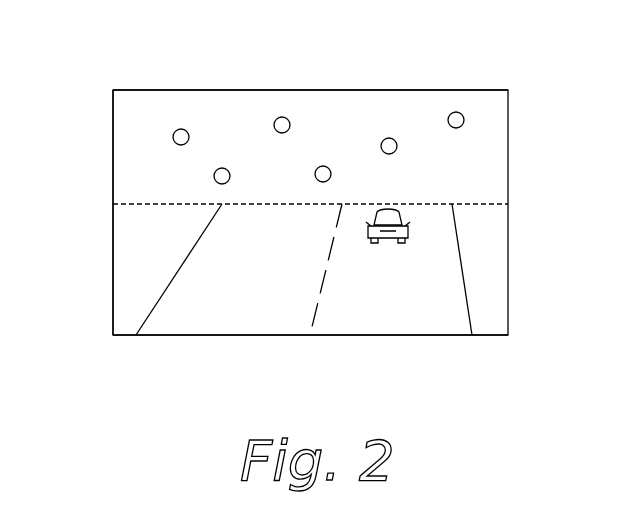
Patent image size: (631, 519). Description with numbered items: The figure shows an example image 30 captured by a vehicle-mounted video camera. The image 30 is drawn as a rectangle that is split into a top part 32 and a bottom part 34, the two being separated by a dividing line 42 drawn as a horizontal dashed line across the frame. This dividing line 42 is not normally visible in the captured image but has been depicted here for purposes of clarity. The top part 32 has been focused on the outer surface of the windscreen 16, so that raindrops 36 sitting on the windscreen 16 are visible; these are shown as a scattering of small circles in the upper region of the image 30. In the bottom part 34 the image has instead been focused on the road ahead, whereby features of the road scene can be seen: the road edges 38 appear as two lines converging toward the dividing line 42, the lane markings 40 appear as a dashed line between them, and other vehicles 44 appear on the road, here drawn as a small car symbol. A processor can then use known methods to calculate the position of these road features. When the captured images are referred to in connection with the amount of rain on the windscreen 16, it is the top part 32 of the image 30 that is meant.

The windscreen 16 is at (487, 158).
The image 30 is at (508, 283).
The top part 32 is at (145, 90).
The bottom part 34 is at (163, 336).
The raindrops 36 is at (323, 166).
The road edges 38 is at (179, 273).
The lane markings 40 is at (316, 305).
The dividing line 42 is at (160, 204).
The other vehicles 44 is at (403, 223).